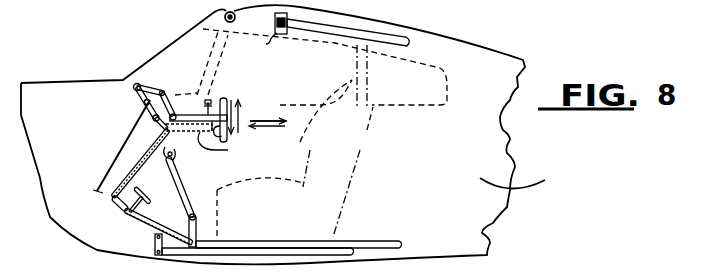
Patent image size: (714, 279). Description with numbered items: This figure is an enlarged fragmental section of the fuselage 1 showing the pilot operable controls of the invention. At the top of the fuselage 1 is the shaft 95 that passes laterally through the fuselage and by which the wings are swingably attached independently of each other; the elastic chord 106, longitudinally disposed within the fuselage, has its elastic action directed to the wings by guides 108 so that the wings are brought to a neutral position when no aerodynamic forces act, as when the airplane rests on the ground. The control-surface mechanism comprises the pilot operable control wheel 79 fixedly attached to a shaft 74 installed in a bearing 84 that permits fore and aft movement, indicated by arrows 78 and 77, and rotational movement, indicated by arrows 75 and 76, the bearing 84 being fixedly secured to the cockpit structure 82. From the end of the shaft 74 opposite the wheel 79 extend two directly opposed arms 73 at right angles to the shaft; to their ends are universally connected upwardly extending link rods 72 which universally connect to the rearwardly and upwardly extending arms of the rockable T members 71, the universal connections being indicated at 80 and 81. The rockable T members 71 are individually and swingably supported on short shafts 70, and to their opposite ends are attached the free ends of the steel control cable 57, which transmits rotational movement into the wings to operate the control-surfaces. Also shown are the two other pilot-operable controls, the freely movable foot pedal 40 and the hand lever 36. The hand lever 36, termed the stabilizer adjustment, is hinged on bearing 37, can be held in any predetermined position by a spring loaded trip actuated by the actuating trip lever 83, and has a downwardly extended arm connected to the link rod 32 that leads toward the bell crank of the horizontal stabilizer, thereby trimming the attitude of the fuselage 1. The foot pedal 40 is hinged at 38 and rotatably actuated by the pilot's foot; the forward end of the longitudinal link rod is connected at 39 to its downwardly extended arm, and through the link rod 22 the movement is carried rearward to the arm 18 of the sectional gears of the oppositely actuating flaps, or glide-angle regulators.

The fuselage 1 is at (290, 134).
The arm 18 is at (275, 118).
The link rod 22 is at (248, 255).
The link rod 32 is at (375, 241).
The hand lever 36 is at (183, 189).
The bearing 37 is at (196, 216).
The hinge 38 is at (155, 239).
The connection 39 is at (157, 253).
The foot pedal 40 is at (128, 213).
The steel control cable 57 is at (107, 153).
The short shaft 70 is at (146, 104).
The rockable T member 71 is at (139, 84).
The link rod 72 is at (167, 99).
The arm 73 is at (165, 127).
The shaft 74 is at (192, 115).
The arrow 75 is at (233, 101).
The arrow 76 is at (242, 104).
The arrow 77 is at (258, 128).
The arrow 78 is at (268, 121).
The control wheel 79 is at (222, 97).
The universal connection 80 is at (152, 90).
The universal connection 81 is at (189, 127).
The cockpit structure 82 is at (109, 204).
The actuating trip lever 83 is at (172, 152).
The bearing 84 is at (223, 142).
The shaft 95 is at (223, 12).
The elastic chord 106 is at (382, 38).
The guide 108 is at (276, 30).